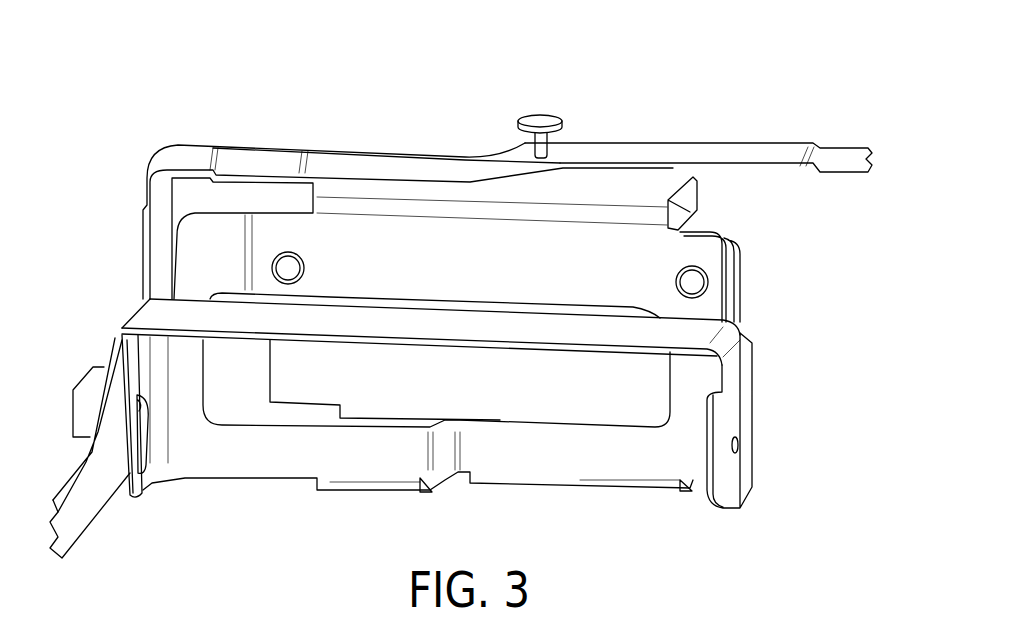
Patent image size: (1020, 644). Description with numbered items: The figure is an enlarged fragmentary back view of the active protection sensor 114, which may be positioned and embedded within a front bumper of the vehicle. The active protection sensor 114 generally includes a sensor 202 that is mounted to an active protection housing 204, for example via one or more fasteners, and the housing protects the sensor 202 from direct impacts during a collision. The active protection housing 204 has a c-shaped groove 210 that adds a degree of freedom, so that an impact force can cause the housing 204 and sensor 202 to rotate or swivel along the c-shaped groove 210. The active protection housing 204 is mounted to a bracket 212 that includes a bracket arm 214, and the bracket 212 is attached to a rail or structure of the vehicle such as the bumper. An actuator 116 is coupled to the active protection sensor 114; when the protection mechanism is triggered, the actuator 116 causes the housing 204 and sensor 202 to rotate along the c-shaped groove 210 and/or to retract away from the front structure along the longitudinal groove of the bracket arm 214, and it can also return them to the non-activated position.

The active protection sensor 114 is at (243, 99).
The actuator 116 is at (83, 410).
The sensor 202 is at (513, 393).
The active protection housing 204 is at (718, 203).
The c-shaped groove 210 is at (149, 457).
The bracket 212 is at (760, 153).
The bracket arm 214 is at (67, 527).